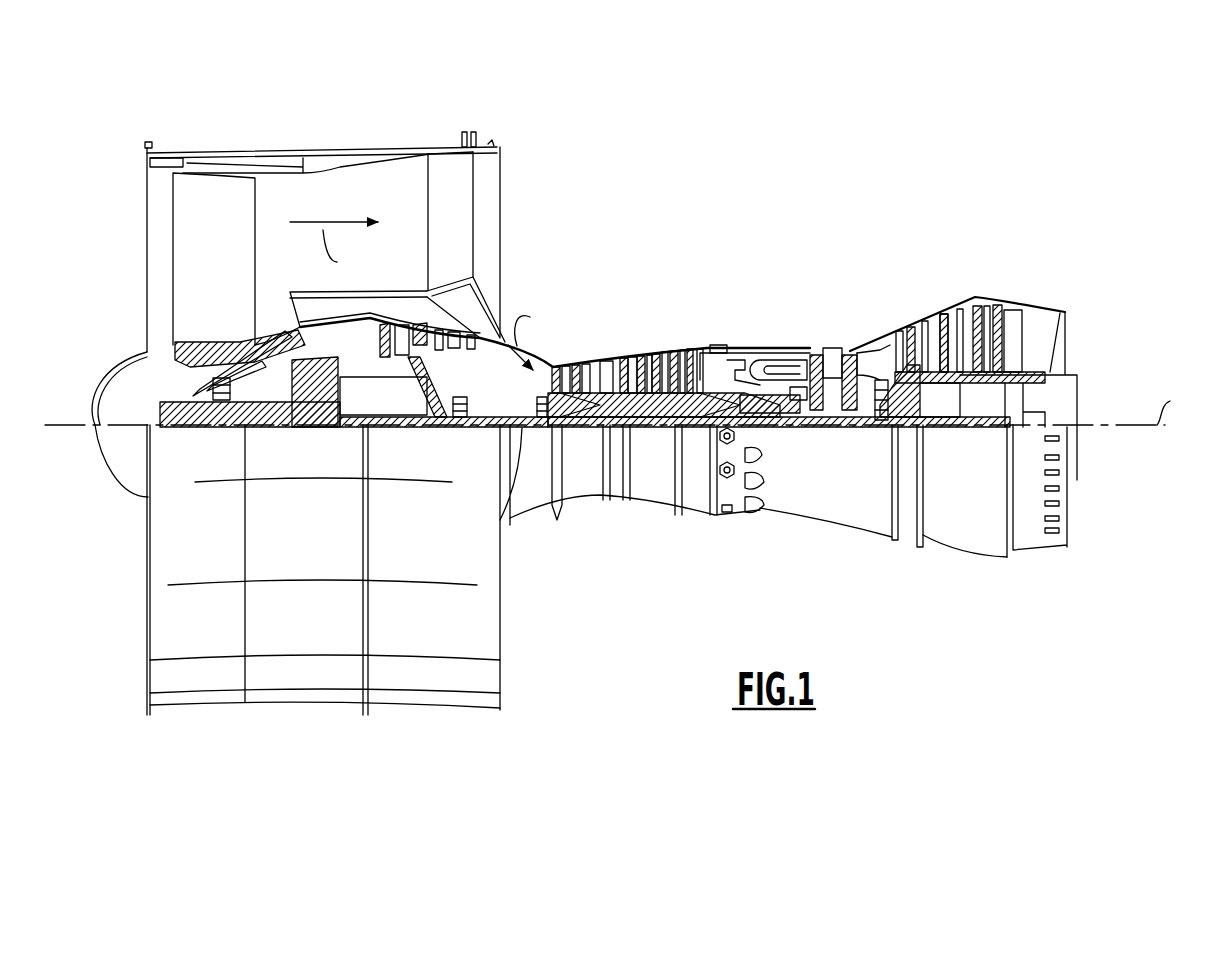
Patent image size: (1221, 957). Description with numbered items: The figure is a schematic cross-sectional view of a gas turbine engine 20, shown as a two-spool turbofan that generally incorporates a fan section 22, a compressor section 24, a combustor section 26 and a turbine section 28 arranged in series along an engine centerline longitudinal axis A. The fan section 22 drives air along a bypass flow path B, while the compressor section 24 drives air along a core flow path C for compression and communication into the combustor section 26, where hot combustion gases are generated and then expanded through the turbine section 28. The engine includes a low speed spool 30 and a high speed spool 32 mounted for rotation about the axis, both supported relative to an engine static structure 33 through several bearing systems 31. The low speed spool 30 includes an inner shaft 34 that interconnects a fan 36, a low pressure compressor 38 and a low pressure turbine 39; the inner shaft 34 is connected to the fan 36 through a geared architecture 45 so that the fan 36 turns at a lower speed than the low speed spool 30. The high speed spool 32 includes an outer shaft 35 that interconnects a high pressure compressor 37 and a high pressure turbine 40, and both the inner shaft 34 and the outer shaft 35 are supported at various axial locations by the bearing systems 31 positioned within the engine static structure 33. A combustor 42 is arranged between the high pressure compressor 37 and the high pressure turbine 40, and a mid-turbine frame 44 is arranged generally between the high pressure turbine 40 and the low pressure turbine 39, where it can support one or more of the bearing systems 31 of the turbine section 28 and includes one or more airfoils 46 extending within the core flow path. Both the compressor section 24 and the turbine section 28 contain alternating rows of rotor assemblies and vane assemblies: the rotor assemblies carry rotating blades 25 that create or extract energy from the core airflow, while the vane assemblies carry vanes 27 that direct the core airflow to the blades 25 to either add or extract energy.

The gas turbine engine 20 is at (772, 200).
The fan section 22 is at (252, 140).
The compressor section 24 is at (550, 330).
The blades 25 is at (388, 325).
The combustor section 26 is at (767, 325).
The vanes 27 is at (403, 328).
The turbine section 28 is at (912, 283).
The low speed spool 30 is at (654, 445).
The bearing systems 31 is at (252, 425).
The high speed spool 32 is at (690, 390).
The engine static structure 33 is at (697, 515).
The inner shaft 34 is at (522, 428).
The outer shaft 35 is at (777, 427).
The fan 36 is at (228, 276).
The high pressure compressor 37 is at (627, 395).
The low pressure compressor 38 is at (443, 330).
The low pressure turbine 39 is at (943, 335).
The high pressure turbine 40 is at (833, 348).
The combustor 42 is at (767, 370).
The mid-turbine frame 44 is at (878, 335).
The geared architecture 45 is at (325, 427).
The airfoils 46 is at (890, 370).